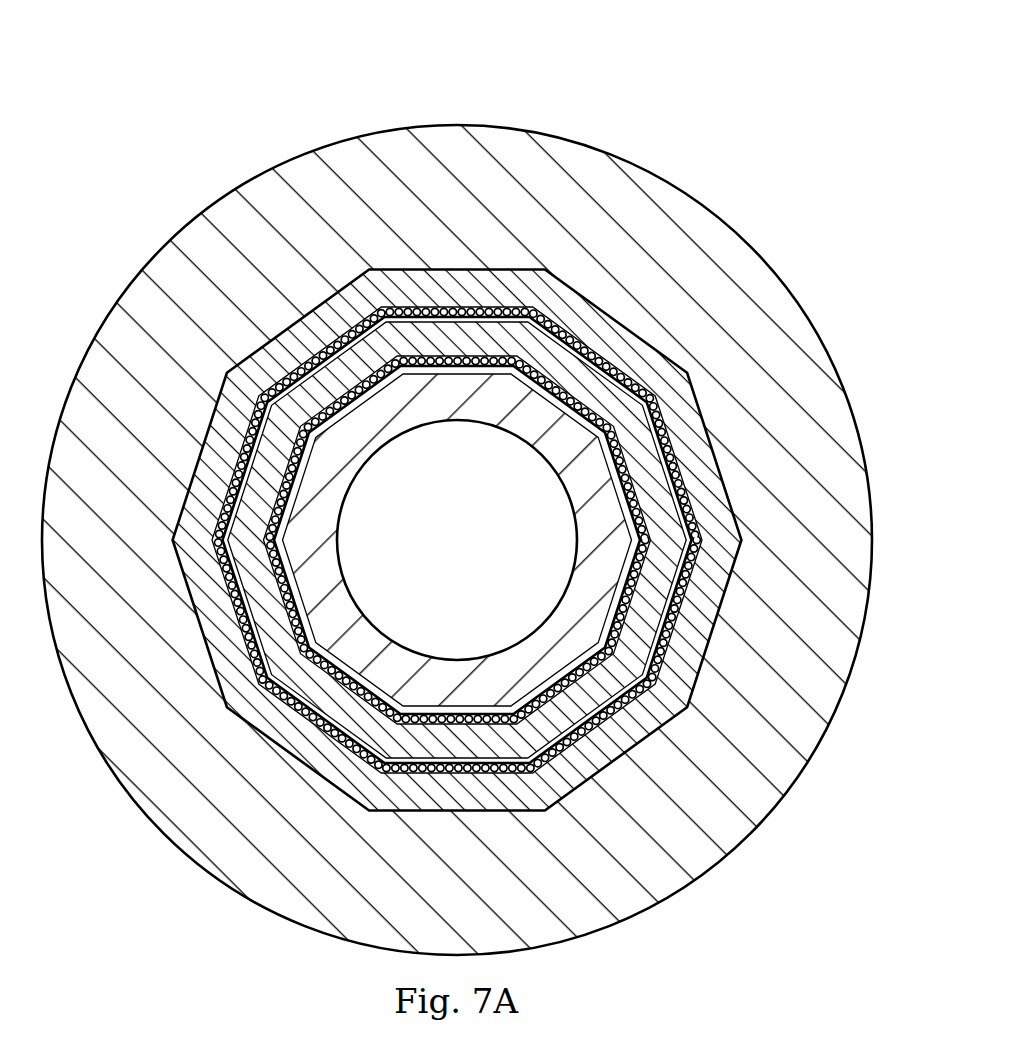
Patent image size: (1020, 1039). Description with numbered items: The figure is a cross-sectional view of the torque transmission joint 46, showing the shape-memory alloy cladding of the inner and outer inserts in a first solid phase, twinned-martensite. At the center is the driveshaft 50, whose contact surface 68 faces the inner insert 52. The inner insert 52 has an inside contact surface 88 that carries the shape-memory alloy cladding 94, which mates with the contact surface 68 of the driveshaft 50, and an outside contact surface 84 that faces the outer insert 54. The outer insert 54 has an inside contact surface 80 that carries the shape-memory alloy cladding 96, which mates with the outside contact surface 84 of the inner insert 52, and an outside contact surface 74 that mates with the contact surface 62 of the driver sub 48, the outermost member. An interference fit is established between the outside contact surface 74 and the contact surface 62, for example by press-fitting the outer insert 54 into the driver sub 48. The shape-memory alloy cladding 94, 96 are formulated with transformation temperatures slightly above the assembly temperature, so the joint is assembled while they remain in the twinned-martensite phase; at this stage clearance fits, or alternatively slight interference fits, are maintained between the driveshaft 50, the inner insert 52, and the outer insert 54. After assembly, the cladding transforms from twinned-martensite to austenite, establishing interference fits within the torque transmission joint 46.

The torque transmission joint 46 is at (264, 82).
The driver sub 48 is at (690, 219).
The driveshaft 50 is at (418, 418).
The inner insert 52 is at (420, 744).
The outer insert 54 is at (497, 798).
The contact surface 62 is at (720, 486).
The contact surface 68 is at (424, 303).
The outside contact surface 74 is at (716, 462).
The inside contact surface 80 is at (597, 375).
The outside contact surface 84 is at (573, 379).
The inside contact surface 88 is at (475, 372).
The shape-memory alloy cladding 94 is at (626, 608).
The shape-memory alloy cladding 96 is at (690, 570).